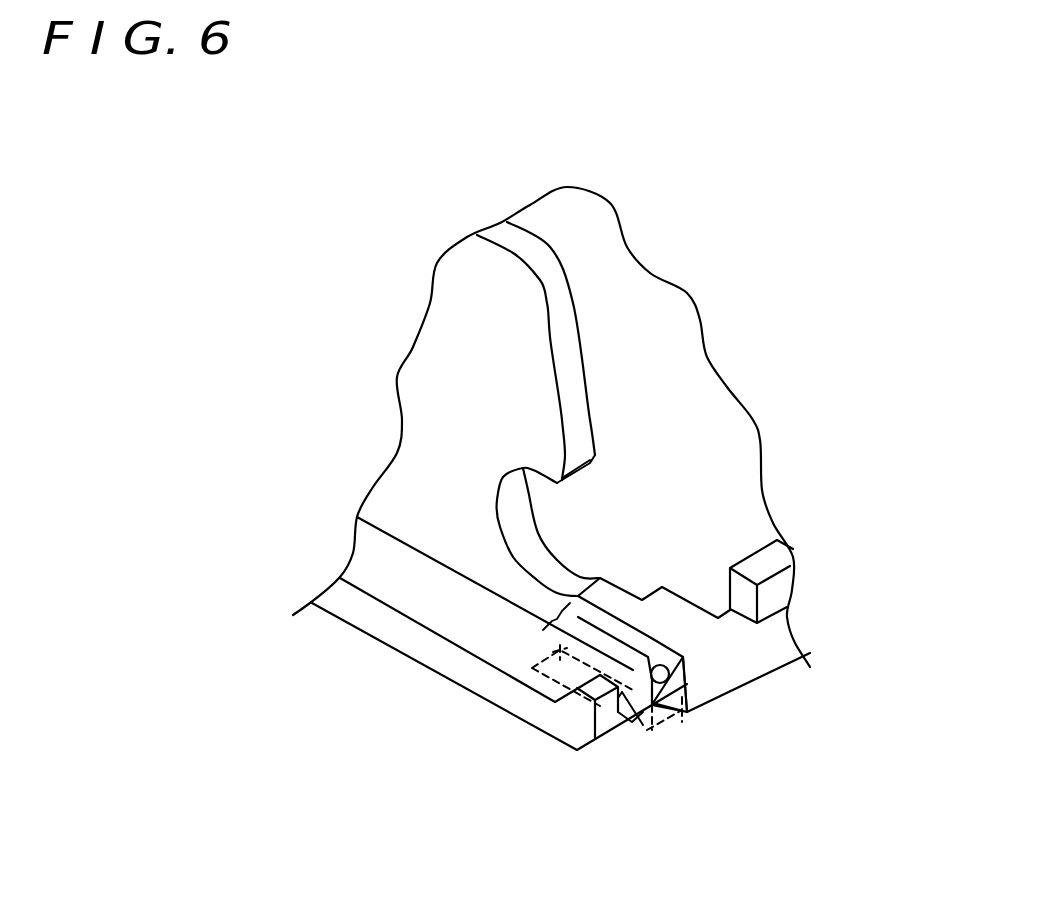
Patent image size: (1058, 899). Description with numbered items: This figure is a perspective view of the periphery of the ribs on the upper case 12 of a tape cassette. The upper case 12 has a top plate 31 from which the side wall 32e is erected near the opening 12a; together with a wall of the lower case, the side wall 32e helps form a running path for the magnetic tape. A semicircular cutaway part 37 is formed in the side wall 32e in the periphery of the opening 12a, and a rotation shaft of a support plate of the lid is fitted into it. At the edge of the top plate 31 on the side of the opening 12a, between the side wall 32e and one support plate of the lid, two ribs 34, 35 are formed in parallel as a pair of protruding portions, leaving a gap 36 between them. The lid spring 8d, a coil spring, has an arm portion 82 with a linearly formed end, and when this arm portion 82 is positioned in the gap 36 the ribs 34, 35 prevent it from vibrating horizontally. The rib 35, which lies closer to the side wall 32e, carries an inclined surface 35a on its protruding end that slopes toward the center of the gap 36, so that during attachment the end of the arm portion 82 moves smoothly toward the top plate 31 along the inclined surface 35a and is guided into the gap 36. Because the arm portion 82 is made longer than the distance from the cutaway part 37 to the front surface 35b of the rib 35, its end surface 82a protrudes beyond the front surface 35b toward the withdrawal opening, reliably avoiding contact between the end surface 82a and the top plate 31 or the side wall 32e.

The upper case 12 is at (370, 227).
The side wall 32e is at (428, 355).
The top plate 31 is at (368, 563).
The semicircular cutaway part 37 is at (575, 520).
The inclined surface 35a is at (667, 662).
The opening 12a is at (746, 548).
The lid spring 8d is at (541, 618).
The arm portion 82 is at (570, 627).
The end surface 82a is at (532, 668).
The gap 36 is at (643, 730).
The rib 34 is at (607, 718).
The front surface 35b is at (672, 723).
The rib 35 is at (670, 728).